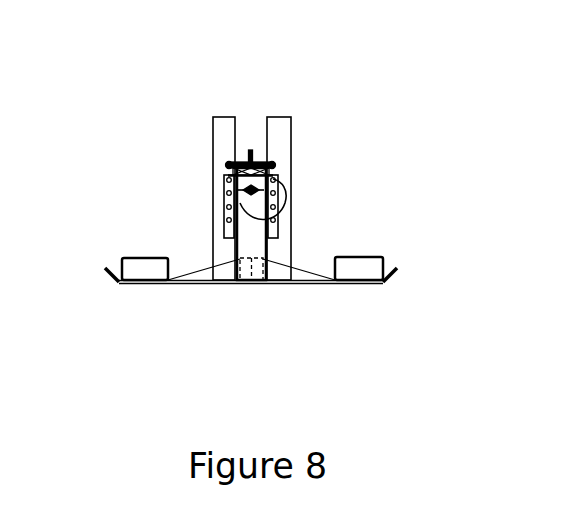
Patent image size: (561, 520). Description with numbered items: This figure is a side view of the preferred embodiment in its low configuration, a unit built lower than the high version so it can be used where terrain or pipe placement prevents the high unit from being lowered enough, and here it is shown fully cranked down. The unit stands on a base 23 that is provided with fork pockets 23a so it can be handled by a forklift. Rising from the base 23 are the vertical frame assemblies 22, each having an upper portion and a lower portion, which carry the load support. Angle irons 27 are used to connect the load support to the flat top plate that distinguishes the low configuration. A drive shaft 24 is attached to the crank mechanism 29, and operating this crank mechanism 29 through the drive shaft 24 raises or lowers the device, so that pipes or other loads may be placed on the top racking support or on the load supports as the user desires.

The vertical frame assembly 22 is at (255, 242).
The base 23 is at (208, 283).
The fork pocket 23a is at (150, 256).
The drive shaft 24 is at (257, 157).
The angle iron 27 is at (213, 142).
The crank mechanism 29 is at (287, 203).